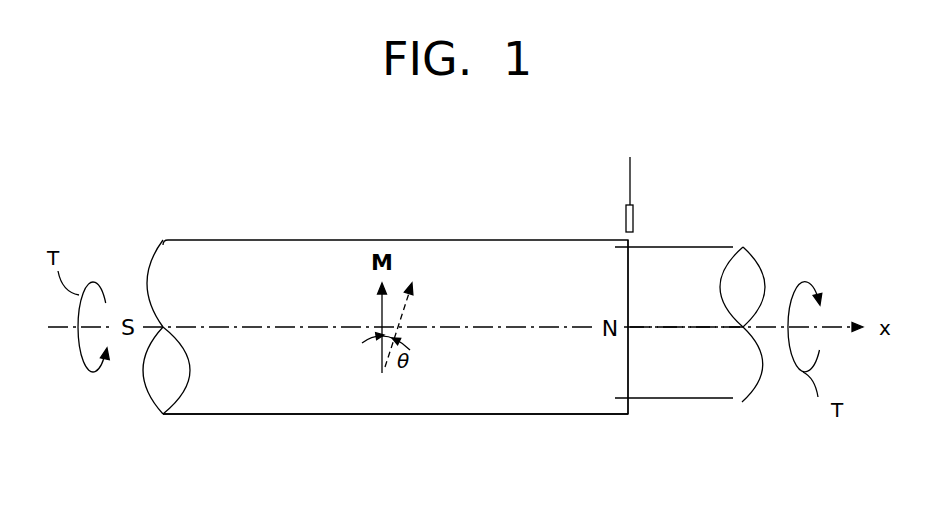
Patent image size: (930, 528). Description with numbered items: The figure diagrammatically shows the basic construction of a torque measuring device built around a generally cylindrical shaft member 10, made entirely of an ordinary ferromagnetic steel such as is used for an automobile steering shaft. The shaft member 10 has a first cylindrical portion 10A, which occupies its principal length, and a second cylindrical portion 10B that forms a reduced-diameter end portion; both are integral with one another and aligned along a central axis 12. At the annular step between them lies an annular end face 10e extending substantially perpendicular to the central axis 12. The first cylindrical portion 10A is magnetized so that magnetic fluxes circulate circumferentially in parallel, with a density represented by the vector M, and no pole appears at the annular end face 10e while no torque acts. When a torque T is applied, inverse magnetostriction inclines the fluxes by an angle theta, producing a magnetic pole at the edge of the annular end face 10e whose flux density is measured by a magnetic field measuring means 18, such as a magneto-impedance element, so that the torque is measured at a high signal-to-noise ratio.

The shaft member 10 is at (214, 231).
The first cylindrical portion 10A is at (257, 414).
The second cylindrical portion 10B is at (680, 398).
The annular end face 10e is at (630, 247).
The central axis 12 is at (710, 330).
The magnetic field measuring means 18 is at (626, 220).